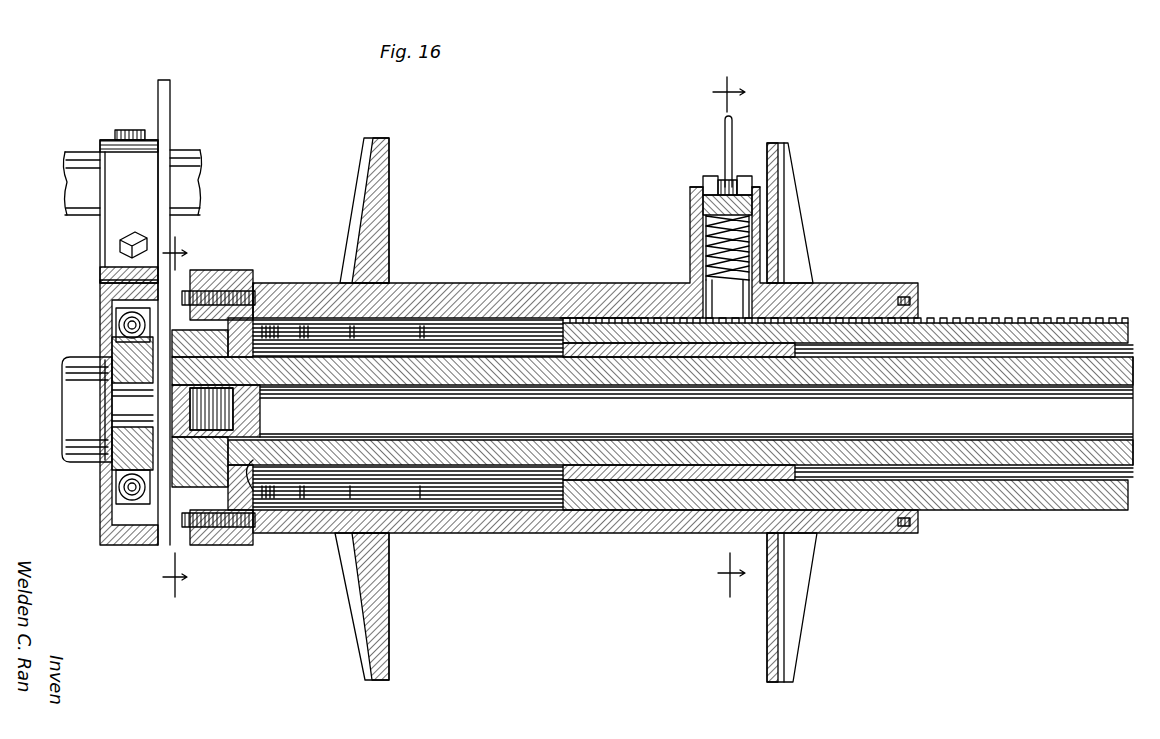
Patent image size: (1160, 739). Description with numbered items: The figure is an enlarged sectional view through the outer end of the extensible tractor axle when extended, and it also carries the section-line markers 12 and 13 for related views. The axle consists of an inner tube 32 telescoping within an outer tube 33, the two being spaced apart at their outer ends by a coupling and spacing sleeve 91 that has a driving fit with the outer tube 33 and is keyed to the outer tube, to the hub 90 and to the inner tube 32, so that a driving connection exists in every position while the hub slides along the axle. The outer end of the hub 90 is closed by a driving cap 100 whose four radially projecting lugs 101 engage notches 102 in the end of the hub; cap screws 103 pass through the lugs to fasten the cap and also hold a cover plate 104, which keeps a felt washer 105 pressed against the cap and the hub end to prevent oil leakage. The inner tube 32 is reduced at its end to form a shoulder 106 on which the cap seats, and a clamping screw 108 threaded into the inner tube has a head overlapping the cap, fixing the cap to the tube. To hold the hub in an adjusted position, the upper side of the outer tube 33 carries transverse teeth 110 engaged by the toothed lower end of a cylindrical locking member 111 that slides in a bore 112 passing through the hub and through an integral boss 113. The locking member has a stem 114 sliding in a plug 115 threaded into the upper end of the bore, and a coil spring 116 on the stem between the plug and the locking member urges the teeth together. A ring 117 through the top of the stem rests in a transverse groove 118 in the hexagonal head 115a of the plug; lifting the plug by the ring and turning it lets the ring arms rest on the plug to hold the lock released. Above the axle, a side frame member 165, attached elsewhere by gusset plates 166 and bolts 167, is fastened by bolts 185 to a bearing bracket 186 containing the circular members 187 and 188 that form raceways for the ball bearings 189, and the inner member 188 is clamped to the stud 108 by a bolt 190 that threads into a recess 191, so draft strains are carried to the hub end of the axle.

The section line 12- 12 is at (178, 419).
The section line 13- 13 is at (729, 337).
The inner tube 32 is at (1052, 372).
The outer tube 33 is at (1003, 333).
The hub 90 is at (558, 296).
The coupling and spacing sleeve 91 is at (600, 472).
The driving cap 100 is at (286, 292).
The radially projecting lugs 101 is at (232, 285).
The notches 102 is at (197, 290).
The cap screws 103 is at (180, 292).
The cover plate 104 is at (185, 537).
The washer 105 is at (190, 536).
The shoulder 106 is at (250, 500).
The clamping screw 108 is at (155, 430).
The teeth 110 is at (950, 325).
The locking member 111 is at (772, 283).
The cylindrical bore 112 is at (705, 236).
The boss 113 is at (718, 222).
The stem 114 is at (715, 192).
The plug 115 is at (754, 178).
The hexagonal head 115a is at (708, 176).
The coil spring 116 is at (712, 256).
The ring 117 is at (722, 132).
The transverse groove 118 is at (738, 172).
The side frame members 165 is at (110, 222).
The gusset plates 166 is at (173, 162).
The bolts 167 is at (142, 131).
The bolts 185 is at (120, 240).
The bearing brackets 186 is at (104, 284).
The circular member 187 is at (104, 318).
The inner member 188 is at (112, 352).
The ball bearings 189 is at (128, 490).
The bolt 190 is at (72, 412).
The recess 191 is at (235, 415).